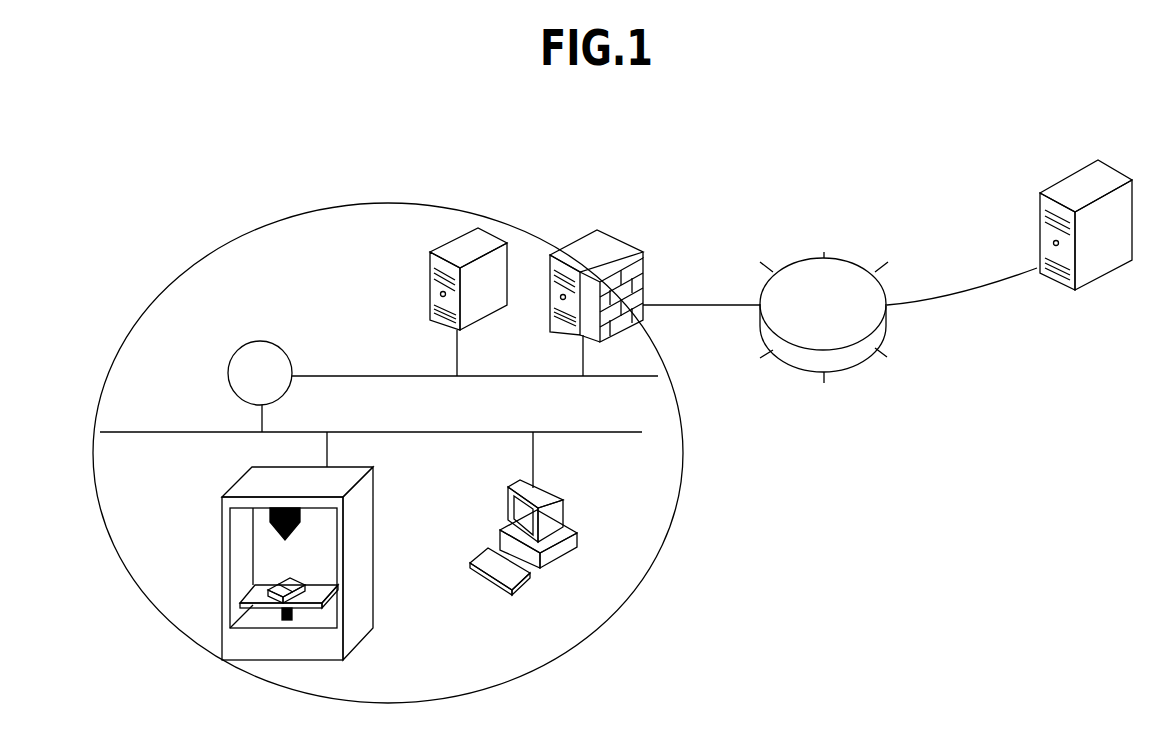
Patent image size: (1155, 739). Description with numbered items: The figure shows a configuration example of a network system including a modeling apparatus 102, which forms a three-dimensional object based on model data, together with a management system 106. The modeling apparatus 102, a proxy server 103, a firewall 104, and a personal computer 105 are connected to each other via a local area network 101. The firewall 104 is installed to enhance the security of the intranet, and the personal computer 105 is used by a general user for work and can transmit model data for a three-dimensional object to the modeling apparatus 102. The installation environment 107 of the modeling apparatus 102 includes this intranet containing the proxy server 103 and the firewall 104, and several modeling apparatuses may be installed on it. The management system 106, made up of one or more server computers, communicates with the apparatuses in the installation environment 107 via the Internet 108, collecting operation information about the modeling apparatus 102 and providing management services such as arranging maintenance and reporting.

The local area network 101 is at (270, 340).
The modeling apparatus 102 is at (222, 555).
The proxy server 103 is at (478, 228).
The firewall 104 is at (613, 233).
The personal computer 105 is at (497, 588).
The management system 106 is at (1057, 283).
The installation environment 107 is at (384, 203).
The Internet 108 is at (847, 262).